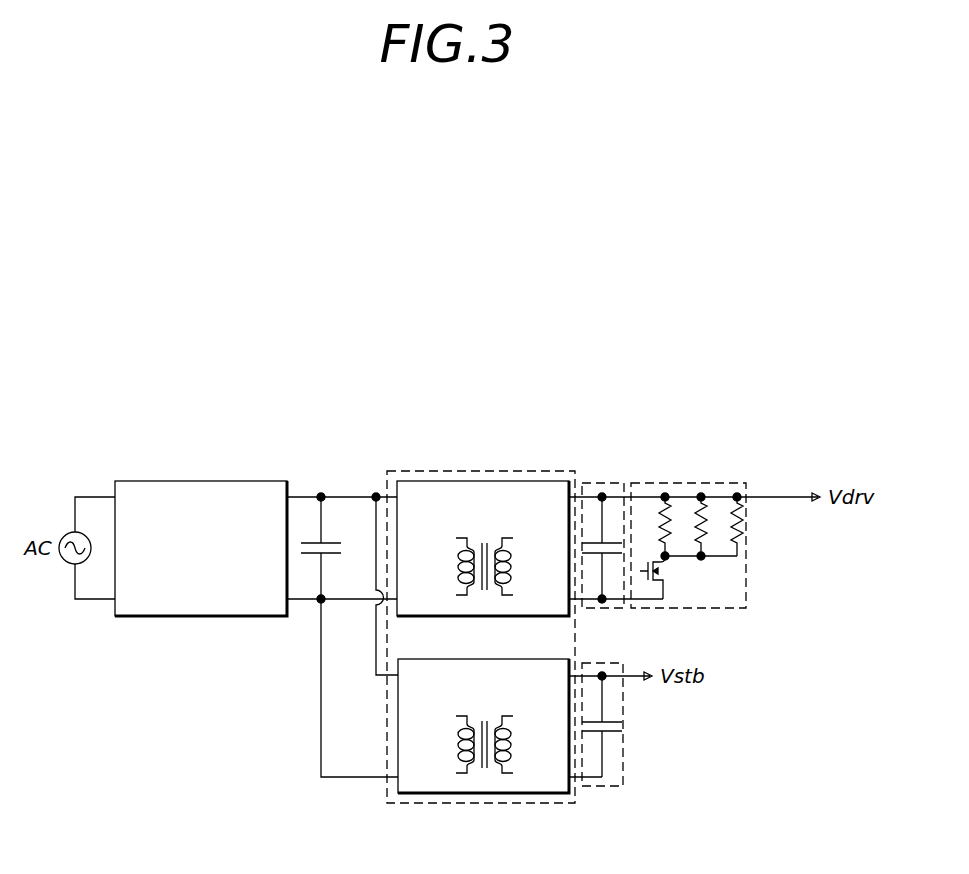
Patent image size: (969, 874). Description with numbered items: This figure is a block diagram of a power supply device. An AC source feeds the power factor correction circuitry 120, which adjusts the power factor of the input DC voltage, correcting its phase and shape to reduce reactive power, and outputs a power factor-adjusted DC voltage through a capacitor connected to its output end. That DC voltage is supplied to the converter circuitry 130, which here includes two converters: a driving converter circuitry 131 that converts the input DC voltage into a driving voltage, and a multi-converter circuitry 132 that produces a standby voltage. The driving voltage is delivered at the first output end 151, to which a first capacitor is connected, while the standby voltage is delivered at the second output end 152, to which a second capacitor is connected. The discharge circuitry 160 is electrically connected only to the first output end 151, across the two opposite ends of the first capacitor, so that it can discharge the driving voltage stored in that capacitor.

The power factor correction circuitry 120 is at (200, 481).
The converter circuitry 130 is at (440, 471).
The driving converter circuitry 131 is at (512, 481).
The multi-converter circuitry 132 is at (483, 793).
The first output end 151 is at (608, 483).
The second output end 152 is at (603, 786).
The discharge circuitry 160 is at (688, 483).